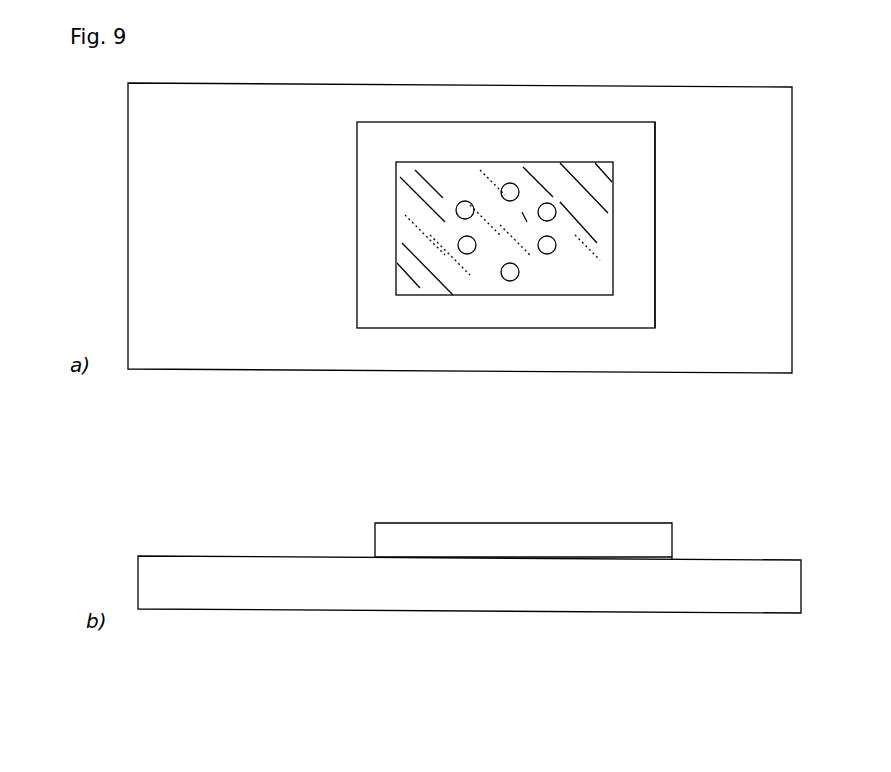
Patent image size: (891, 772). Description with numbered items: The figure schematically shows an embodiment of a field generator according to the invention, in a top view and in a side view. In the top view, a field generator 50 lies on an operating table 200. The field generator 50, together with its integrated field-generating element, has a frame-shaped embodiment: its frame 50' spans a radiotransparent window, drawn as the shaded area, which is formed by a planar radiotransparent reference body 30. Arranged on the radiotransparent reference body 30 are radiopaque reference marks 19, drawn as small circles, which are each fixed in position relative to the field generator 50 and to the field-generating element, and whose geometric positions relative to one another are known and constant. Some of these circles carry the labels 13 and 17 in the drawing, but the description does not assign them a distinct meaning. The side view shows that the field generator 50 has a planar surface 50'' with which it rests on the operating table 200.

The operating table 200 is at (770, 331).
The field generator 50 is at (552, 339).
The frame 50' is at (676, 225).
The planar surface 50'' is at (523, 623).
The radiotransparent reference body 30 is at (583, 180).
The reference marks 19 is at (460, 203).
The contact pad 13 is at (546, 205).
The contact pad 17 is at (462, 250).